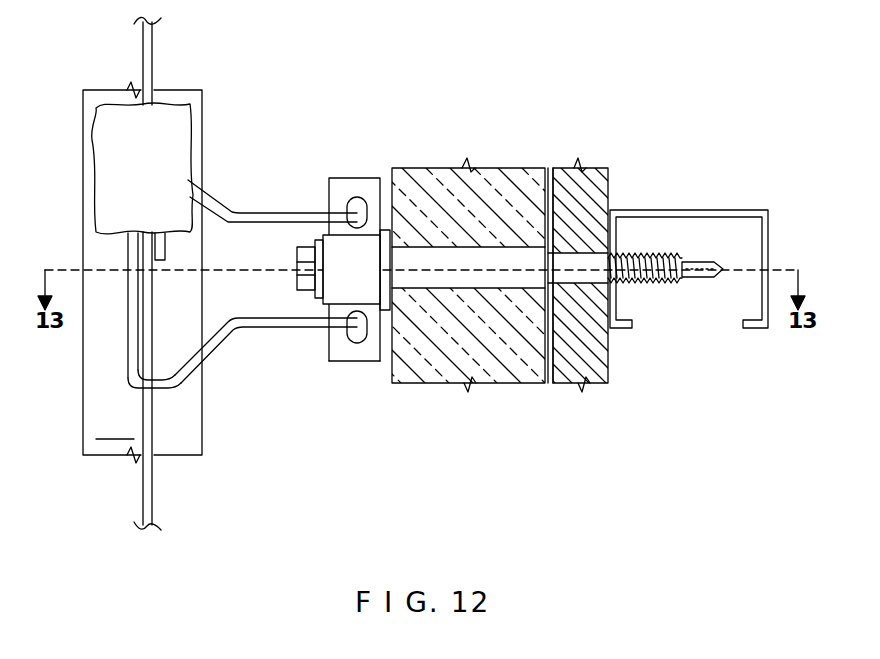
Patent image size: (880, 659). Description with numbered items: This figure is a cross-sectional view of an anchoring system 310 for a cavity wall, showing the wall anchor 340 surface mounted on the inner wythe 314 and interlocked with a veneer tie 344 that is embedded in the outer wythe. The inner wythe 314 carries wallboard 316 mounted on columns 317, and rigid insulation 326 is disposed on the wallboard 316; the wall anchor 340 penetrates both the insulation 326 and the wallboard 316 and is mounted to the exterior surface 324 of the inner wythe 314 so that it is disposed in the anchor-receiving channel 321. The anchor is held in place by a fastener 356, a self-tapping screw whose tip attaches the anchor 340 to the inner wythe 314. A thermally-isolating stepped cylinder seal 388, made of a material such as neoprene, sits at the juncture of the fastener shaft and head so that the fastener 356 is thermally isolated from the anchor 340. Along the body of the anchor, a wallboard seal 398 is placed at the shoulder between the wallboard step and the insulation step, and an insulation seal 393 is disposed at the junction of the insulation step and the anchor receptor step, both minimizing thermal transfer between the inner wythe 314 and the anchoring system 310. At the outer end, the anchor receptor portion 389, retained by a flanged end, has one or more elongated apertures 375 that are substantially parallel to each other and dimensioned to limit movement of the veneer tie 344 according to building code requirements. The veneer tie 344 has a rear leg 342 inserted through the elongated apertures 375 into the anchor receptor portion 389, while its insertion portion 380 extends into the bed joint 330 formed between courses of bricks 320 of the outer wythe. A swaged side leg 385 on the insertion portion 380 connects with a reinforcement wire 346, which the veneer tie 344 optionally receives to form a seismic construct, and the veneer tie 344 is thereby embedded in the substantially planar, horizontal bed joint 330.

The anchoring system 310 is at (698, 290).
The inner wythe 314 is at (553, 167).
The wallboard 316 is at (597, 385).
The columns 317 is at (628, 330).
The bricks 320 is at (142, 272).
The anchor-receiving channel 321 is at (478, 290).
The exterior surface 324 is at (390, 176).
The insulation 326 is at (432, 372).
The bed joint 330 is at (159, 183).
The wall anchor 340 is at (426, 242).
The rear leg 342 is at (213, 343).
The veneer tie 344 is at (288, 206).
The reinforcement wire 346 is at (153, 60).
The fastener 356 is at (298, 283).
The elongated apertures 375 is at (345, 343).
The insertion portion 380 is at (128, 257).
The swaged side leg 385 is at (130, 382).
The stepped cylinder seal 388 is at (298, 253).
The anchor receptor portion 389 is at (363, 360).
The insulation seal 393 is at (383, 287).
The wallboard seal 398 is at (545, 295).